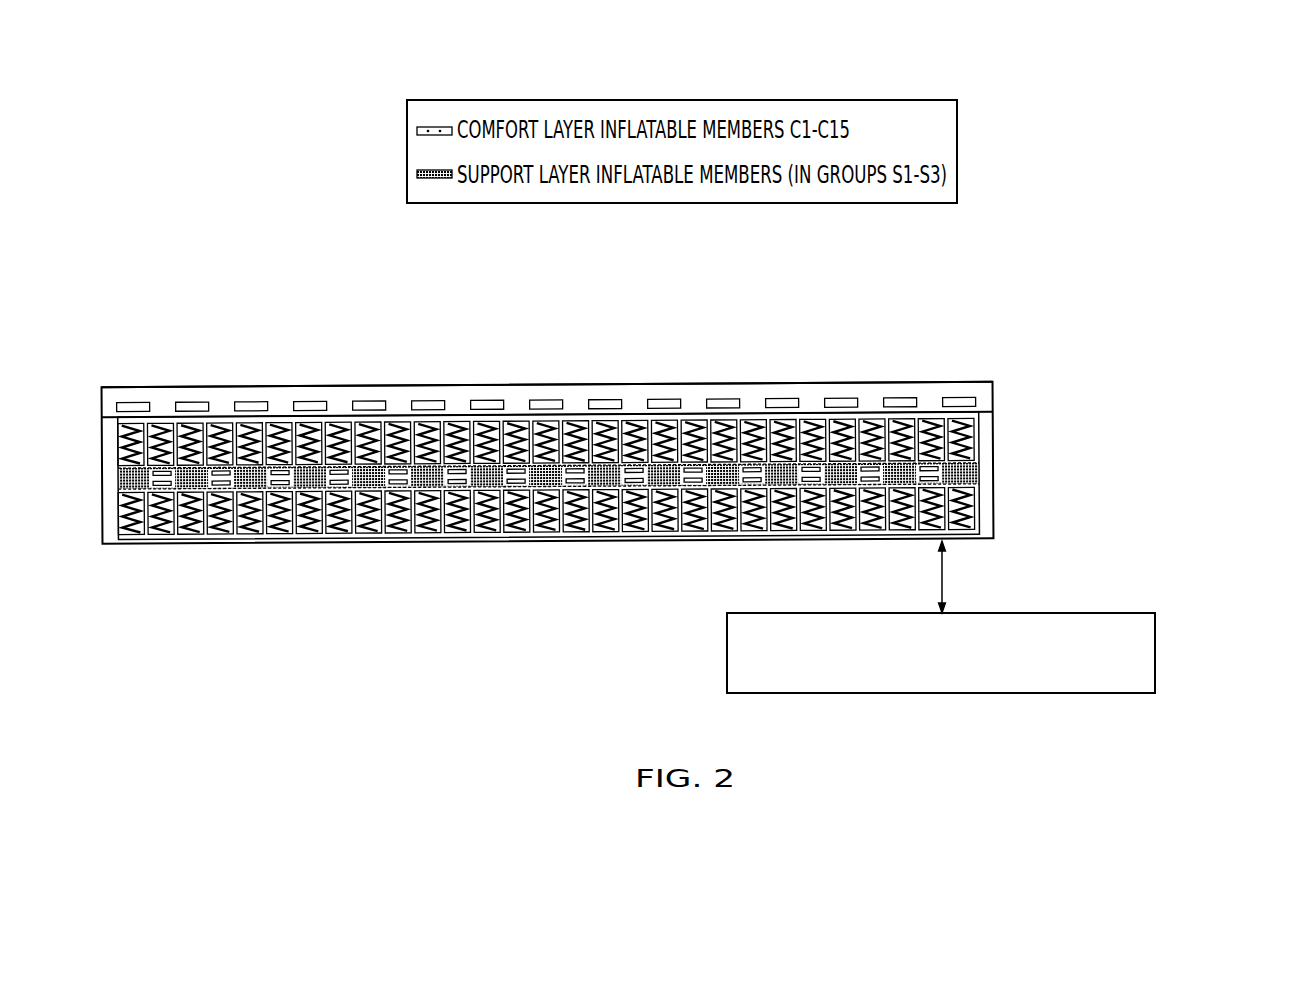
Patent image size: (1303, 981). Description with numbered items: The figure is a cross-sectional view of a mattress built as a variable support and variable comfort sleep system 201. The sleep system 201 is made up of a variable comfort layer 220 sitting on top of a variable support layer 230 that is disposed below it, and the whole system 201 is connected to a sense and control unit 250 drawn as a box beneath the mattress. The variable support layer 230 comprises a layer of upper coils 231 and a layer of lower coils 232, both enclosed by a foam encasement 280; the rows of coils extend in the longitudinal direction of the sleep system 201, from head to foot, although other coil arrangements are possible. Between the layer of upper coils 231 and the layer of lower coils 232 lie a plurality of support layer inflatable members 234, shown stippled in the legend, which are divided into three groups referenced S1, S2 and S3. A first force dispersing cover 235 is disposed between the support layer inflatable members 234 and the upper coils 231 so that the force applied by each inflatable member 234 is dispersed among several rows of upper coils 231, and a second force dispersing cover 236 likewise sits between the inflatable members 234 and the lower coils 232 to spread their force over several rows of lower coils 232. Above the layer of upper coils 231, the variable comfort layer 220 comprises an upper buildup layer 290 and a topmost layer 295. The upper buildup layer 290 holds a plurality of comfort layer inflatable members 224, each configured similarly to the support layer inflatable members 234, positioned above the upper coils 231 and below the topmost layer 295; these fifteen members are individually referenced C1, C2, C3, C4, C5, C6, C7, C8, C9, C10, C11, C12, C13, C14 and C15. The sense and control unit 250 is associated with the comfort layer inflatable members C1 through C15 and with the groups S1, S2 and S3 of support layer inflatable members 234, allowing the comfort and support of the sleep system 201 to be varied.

The variable support and variable comfort sleep system 201 is at (653, 415).
The variable comfort layer 220 is at (576, 375).
The comfort layer inflatable member 224 is at (596, 374).
The variable support layer 230 is at (677, 467).
The layer of upper coils 231 is at (517, 430).
The layer of lower coils 232 is at (522, 522).
The support layer inflatable member 234 is at (642, 487).
The first force dispersing cover 235 is at (120, 471).
The second force dispersing cover 236 is at (120, 489).
The sense and control unit 250 is at (1157, 650).
The foam encasement 280 is at (987, 488).
The upper buildup layer 290 is at (987, 386).
The topmost layer 295 is at (878, 384).
The comfort layer inflatable member C1 is at (136, 400).
The comfort layer inflatable member C2 is at (196, 400).
The comfort layer inflatable member C3 is at (254, 400).
The comfort layer inflatable member C4 is at (314, 400).
The comfort layer inflatable member C5 is at (372, 400).
The comfort layer inflatable member C6 is at (432, 400).
The comfort layer inflatable member C7 is at (490, 400).
The comfort layer inflatable member C8 is at (550, 400).
The comfort layer inflatable member C9 is at (603, 400).
The comfort layer inflatable member C10 is at (668, 400).
The comfort layer inflatable member C11 is at (726, 400).
The comfort layer inflatable member C12 is at (786, 400).
The comfort layer inflatable member C13 is at (844, 400).
The comfort layer inflatable member C14 is at (904, 400).
The comfort layer inflatable member C15 is at (962, 400).
The support layer inflatable member group S1 is at (162, 487).
The support layer inflatable member group S2 is at (518, 523).
The support layer inflatable member group S3 is at (695, 487).